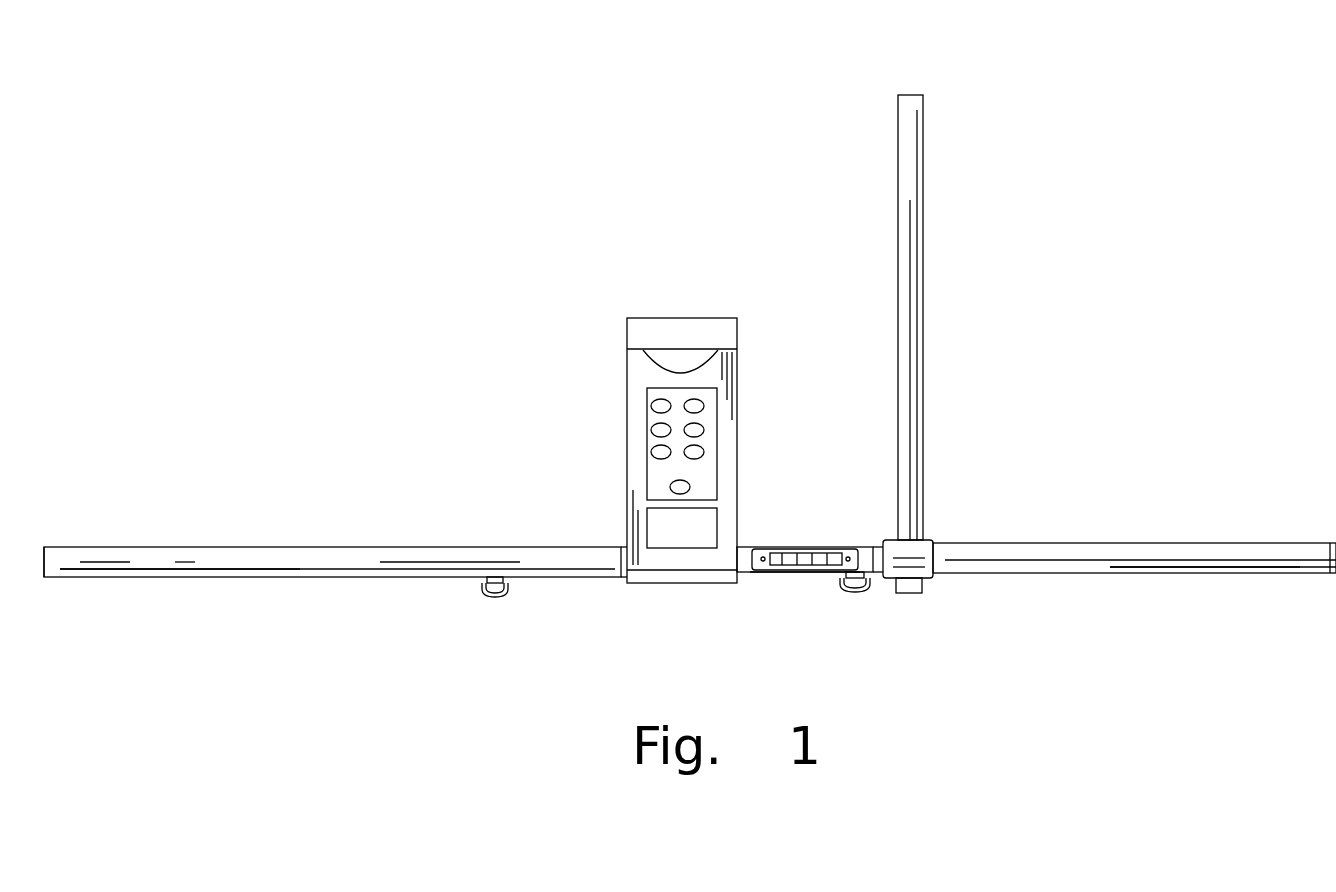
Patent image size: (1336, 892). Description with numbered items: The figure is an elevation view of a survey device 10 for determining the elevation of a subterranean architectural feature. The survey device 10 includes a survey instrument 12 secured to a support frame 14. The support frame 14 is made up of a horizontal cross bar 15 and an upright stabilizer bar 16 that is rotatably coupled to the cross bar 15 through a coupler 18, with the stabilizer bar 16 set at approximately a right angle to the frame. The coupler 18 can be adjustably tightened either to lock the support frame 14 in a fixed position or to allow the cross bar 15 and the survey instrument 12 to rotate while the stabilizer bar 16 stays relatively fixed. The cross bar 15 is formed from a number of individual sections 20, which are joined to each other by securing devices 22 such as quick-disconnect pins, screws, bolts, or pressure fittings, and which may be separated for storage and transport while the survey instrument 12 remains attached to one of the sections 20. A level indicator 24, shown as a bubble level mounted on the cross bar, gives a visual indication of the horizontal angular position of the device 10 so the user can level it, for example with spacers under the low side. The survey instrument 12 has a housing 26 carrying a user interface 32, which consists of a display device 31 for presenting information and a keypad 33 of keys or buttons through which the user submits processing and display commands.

The survey device 10 is at (298, 148).
The survey instrument 12 is at (598, 288).
The support frame 14 is at (190, 610).
The cross bar 15 is at (52, 555).
The stabilizer bar 16 is at (925, 210).
The coupler 18 is at (931, 543).
The sections 20 is at (394, 555).
The securing devices 22 is at (495, 597).
The level indicator 24 is at (796, 566).
The housing 26 is at (703, 318).
The display device 31 is at (708, 529).
The user interface 32 is at (644, 438).
The keypad 33 is at (708, 414).